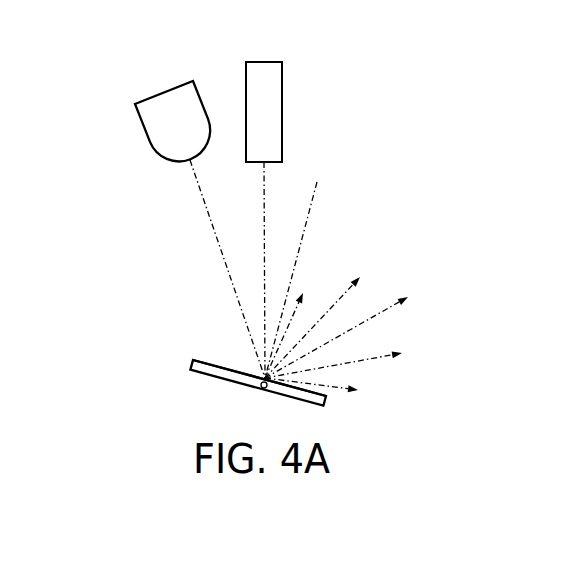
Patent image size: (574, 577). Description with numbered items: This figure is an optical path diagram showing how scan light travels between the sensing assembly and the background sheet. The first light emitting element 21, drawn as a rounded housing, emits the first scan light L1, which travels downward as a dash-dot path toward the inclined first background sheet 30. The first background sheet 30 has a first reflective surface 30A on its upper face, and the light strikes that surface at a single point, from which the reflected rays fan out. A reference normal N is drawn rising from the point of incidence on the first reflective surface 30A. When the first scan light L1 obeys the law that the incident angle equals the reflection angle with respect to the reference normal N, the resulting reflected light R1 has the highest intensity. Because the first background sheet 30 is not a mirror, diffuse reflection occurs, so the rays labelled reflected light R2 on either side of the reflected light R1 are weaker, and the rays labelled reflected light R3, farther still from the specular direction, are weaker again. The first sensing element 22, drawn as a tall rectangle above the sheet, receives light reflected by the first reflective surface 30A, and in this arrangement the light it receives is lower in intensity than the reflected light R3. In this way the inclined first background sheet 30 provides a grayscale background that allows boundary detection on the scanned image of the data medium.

The first light emitting element 21 is at (160, 113).
The first sensing element 22 is at (260, 83).
The first scan light L1 is at (213, 230).
The reference normal N is at (307, 218).
The reflected light R1 is at (357, 330).
The reflected light R2 is at (351, 317).
The reflected light R3 is at (330, 334).
The first background sheet 30 is at (192, 363).
The first reflective surface 30A is at (201, 358).